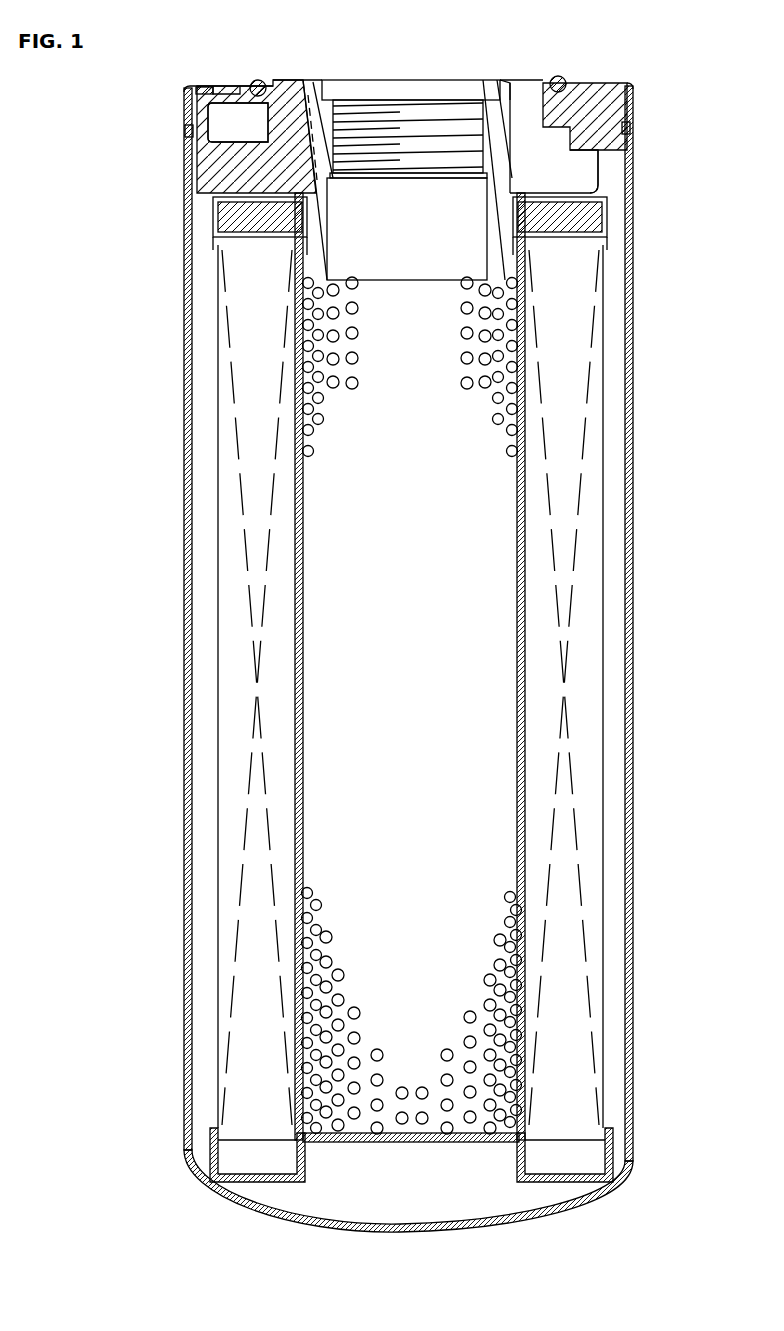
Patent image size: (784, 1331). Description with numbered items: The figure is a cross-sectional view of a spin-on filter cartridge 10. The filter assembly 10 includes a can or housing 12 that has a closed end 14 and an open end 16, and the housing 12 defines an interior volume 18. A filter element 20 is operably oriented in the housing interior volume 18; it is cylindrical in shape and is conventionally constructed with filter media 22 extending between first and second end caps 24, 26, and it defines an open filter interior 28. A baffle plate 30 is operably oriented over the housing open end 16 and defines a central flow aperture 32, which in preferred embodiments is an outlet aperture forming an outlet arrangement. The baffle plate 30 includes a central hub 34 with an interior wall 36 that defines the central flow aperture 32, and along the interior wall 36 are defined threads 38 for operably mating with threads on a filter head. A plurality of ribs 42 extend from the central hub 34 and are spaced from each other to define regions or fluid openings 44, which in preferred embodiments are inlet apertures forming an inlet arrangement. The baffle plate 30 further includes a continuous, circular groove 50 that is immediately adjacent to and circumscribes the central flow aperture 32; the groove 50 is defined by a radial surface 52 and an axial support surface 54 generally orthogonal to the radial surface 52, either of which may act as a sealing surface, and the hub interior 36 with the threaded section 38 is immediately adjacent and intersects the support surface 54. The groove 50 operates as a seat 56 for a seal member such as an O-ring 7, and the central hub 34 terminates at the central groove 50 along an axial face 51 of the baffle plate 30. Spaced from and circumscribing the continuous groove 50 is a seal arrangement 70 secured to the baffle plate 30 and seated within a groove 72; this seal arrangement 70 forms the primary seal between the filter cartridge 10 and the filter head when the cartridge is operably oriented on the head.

The spin-on filter cartridge 10 is at (668, 62).
The housing 12 is at (188, 455).
The closed end 14 is at (478, 1223).
The open end 16 is at (220, 85).
The O-ring 7 is at (252, 79).
The interior volume 18 is at (628, 702).
The filter element 20 is at (605, 606).
The filter media 22 is at (596, 859).
The first end cap 24 is at (608, 215).
The second end cap 26 is at (570, 1180).
The open filter interior 28 is at (338, 614).
The baffle plate 30 is at (628, 105).
The central flow aperture 32 is at (428, 92).
The central hub 34 is at (503, 92).
The interior wall 36 is at (331, 243).
The threads 38 is at (483, 157).
The ribs 42 is at (600, 168).
The fluid openings 44 is at (527, 92).
The groove 50 is at (322, 92).
The axial face 51 is at (292, 80).
The radial surface 52 is at (497, 93).
The axial support surface 54 is at (325, 100).
The seat 56 is at (336, 76).
The seal arrangement 70 is at (560, 84).
The groove 72 is at (270, 92).